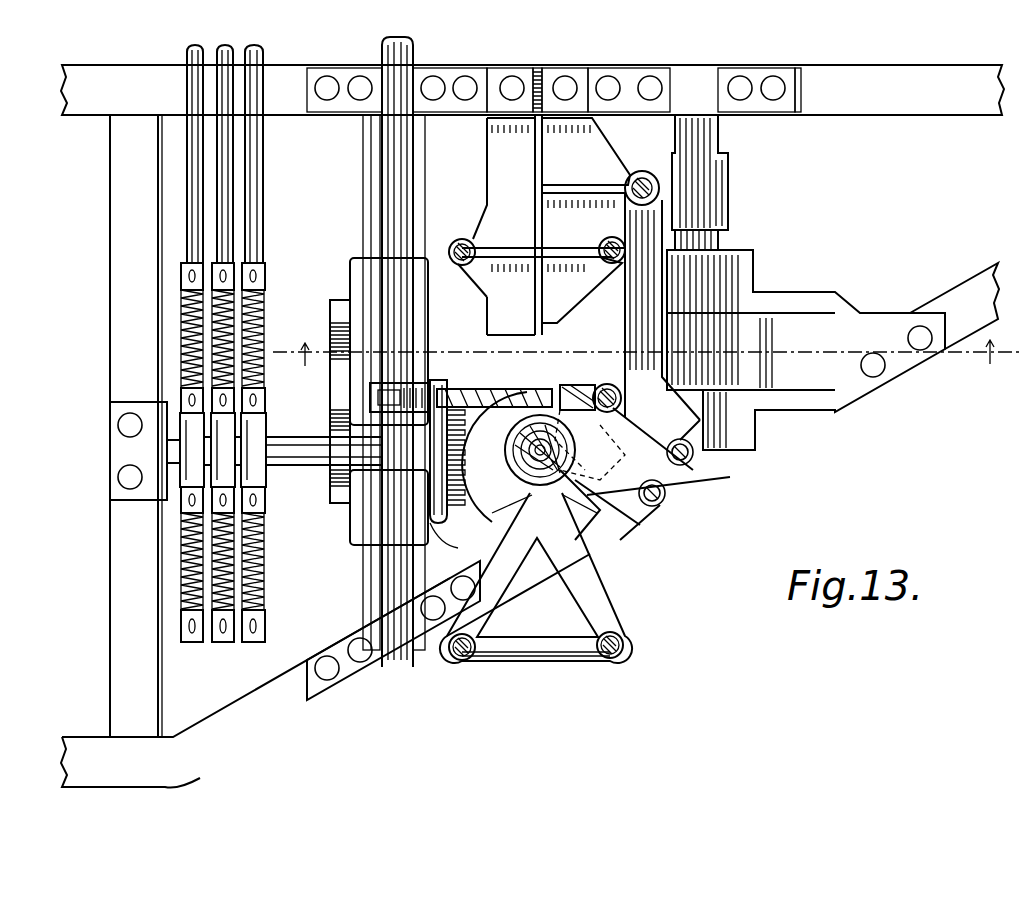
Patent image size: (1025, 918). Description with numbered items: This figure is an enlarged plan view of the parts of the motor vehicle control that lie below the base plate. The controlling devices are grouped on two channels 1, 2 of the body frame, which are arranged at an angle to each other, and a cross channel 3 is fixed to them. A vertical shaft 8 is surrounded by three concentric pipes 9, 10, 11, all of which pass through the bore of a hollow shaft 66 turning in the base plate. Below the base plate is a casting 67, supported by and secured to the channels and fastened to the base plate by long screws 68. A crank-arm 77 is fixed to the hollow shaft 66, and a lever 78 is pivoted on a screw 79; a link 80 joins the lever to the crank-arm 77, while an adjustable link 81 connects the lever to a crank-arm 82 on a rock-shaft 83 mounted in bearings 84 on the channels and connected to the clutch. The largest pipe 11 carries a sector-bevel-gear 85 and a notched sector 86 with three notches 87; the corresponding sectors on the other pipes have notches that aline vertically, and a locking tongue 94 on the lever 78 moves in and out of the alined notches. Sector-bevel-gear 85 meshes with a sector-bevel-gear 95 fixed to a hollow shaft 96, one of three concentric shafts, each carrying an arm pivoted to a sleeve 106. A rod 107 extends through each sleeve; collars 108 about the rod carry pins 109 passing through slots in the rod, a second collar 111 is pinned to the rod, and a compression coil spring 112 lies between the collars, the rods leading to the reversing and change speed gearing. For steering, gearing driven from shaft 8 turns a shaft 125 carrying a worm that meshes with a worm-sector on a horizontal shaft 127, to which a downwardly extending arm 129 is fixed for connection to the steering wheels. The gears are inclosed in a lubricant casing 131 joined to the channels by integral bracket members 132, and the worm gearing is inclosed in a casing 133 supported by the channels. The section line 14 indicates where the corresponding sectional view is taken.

The channel 1 is at (112, 80).
The channel 2 is at (985, 306).
The cross channel 3 is at (138, 426).
The shaft 8 is at (534, 468).
The smallest pipe 9 is at (532, 462).
The pipe 10 is at (528, 456).
The largest pipe 11 is at (528, 450).
The section line 14 is at (647, 352).
The hollow shaft 66 is at (536, 442).
The casting 67 is at (536, 389).
The long screws 68 is at (462, 244).
The crank-arm 77 is at (635, 492).
The lever 78 is at (662, 310).
The screw 79 is at (642, 182).
The link 80 is at (655, 488).
The adjustable link 81 is at (520, 392).
The crank-arm 82 is at (378, 399).
The rock-shaft 83 is at (386, 583).
The bearings 84 is at (398, 82).
The sector-bevel-gear 85 is at (477, 510).
The sector 86 is at (600, 428).
The notches 87 is at (633, 517).
The locking tongue 94 is at (622, 448).
The sector-bevel-gear 95 is at (465, 557).
The hollow shaft 96 is at (274, 451).
The sleeve 106 is at (250, 455).
The rod 107 is at (253, 220).
The collars 108 is at (230, 503).
The pin 109 is at (225, 405).
The second collar 111 is at (265, 272).
The compression coil spring 112 is at (262, 335).
The shaft 125 is at (480, 328).
The horizontal shaft 127 is at (718, 240).
The arm 129 is at (706, 210).
The casing 131 is at (375, 284).
The bracket members 132 is at (378, 150).
The casing 133 is at (806, 350).